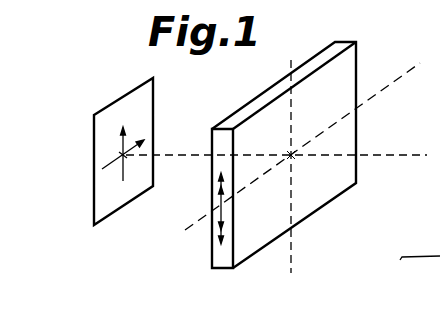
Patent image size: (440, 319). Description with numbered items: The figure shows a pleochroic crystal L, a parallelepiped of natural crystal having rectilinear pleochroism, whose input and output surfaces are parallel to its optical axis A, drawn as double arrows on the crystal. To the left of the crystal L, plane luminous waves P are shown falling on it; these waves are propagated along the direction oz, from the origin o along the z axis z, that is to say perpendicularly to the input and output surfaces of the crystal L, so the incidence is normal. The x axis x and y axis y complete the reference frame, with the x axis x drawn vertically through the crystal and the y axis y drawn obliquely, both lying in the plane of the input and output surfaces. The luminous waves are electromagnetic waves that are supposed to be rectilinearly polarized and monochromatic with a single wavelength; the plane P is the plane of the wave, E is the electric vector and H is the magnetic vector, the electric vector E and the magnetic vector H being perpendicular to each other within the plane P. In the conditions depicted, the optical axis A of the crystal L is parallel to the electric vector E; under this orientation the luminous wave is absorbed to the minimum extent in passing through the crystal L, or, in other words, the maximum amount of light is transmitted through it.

The plane luminous waves P is at (114, 207).
The electric vector E is at (122, 142).
The magnetic vector H is at (124, 147).
The pleochroic crystal L is at (251, 258).
The optical axis A is at (221, 202).
The x axis x is at (290, 157).
The y axis y is at (308, 145).
The z axis z is at (280, 162).
The origin o is at (293, 160).